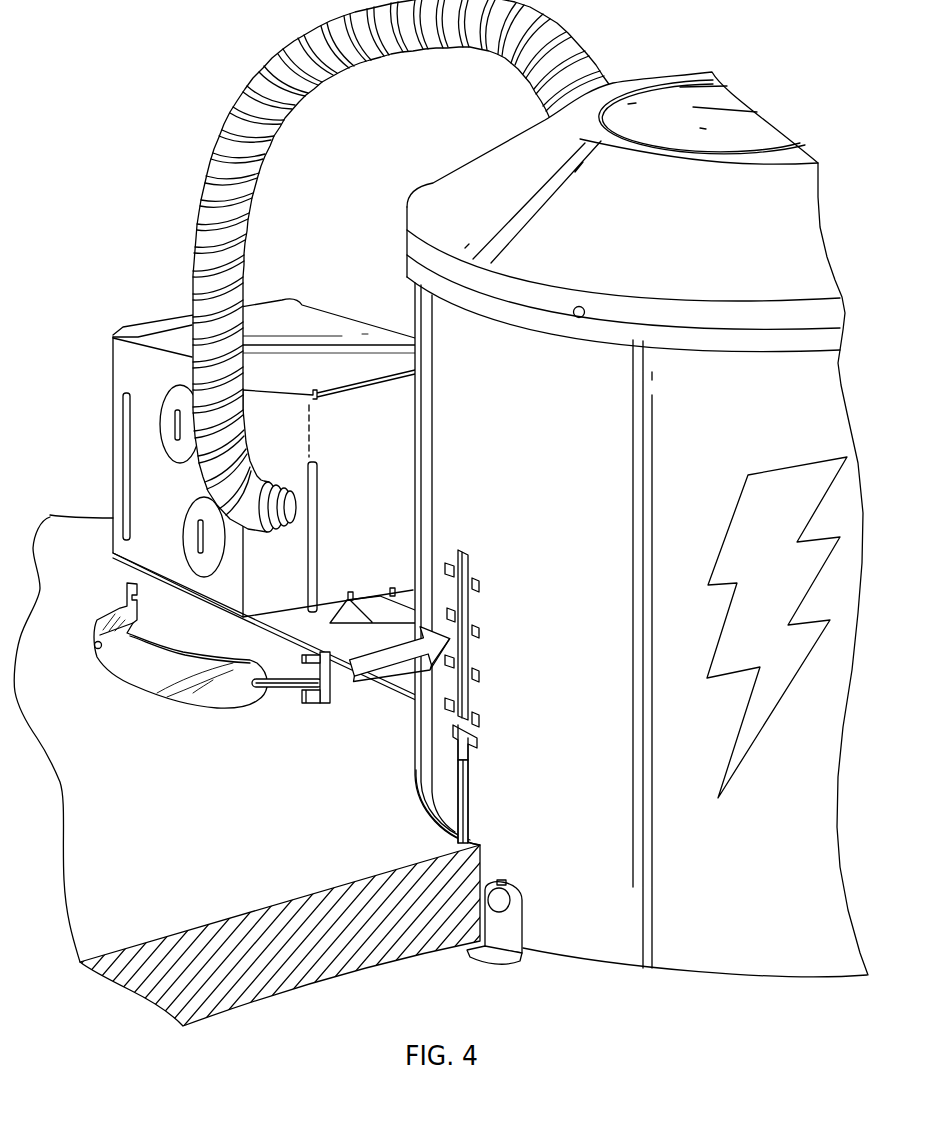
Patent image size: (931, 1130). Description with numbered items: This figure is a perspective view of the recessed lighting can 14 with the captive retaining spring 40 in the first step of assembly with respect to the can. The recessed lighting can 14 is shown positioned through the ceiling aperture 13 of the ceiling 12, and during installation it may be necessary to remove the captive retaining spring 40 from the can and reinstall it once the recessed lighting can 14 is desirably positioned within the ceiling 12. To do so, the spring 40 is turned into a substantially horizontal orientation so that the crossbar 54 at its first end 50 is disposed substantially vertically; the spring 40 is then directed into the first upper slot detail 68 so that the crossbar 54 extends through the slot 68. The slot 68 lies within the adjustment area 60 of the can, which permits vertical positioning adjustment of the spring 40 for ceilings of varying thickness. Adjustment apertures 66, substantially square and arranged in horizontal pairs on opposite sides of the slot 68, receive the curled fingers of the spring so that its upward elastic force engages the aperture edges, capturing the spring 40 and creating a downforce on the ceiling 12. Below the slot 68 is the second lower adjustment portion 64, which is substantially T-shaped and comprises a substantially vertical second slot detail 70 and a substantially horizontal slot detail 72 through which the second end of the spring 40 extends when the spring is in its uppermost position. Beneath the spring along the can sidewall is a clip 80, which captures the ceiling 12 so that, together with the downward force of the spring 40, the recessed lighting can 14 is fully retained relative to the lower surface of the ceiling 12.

The ceiling 12 is at (282, 864).
The ceiling aperture 13 is at (440, 826).
The recessed lighting can 14 is at (479, 174).
The captive retaining spring 40 is at (183, 716).
The first end 50 is at (301, 725).
The upper crossbar 54 is at (322, 706).
The adjustment area 60 is at (536, 680).
The second lower adjustment portion 64 is at (500, 784).
The adjustment apertures 66 is at (455, 617).
The first upper slot detail 68 is at (469, 557).
The second slot detail 70 is at (470, 805).
The horizontal slot detail 72 is at (478, 747).
The clip 80 is at (507, 925).